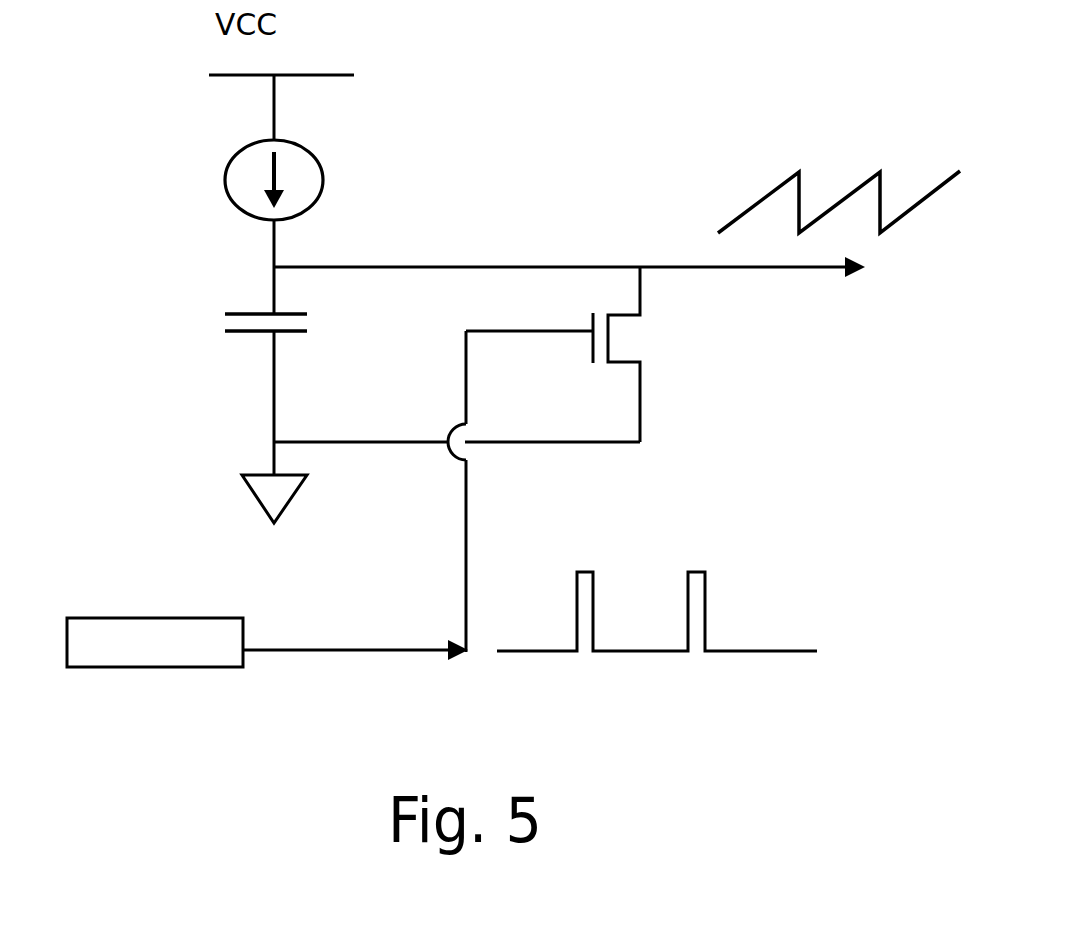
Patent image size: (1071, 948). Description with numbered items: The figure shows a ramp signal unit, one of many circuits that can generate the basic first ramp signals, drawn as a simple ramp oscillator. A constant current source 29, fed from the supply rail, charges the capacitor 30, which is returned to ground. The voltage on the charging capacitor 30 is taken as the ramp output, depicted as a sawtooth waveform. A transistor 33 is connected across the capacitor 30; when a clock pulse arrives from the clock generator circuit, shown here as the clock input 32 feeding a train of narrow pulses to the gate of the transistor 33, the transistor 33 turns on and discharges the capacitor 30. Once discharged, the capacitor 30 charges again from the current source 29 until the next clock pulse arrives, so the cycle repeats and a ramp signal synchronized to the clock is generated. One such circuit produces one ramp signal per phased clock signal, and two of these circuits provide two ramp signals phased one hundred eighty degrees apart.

The constant current source 29 is at (323, 178).
The capacitor 30 is at (327, 323).
The clock signal CLK1,2 block 32 is at (178, 618).
The transistor 33 is at (657, 340).